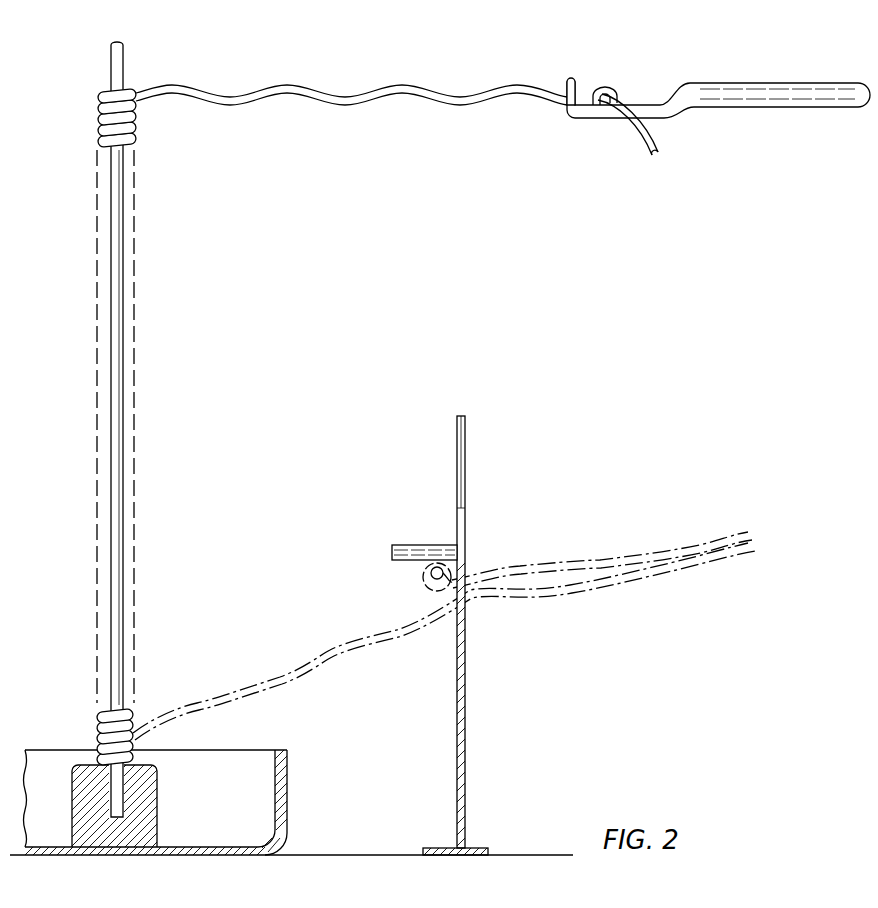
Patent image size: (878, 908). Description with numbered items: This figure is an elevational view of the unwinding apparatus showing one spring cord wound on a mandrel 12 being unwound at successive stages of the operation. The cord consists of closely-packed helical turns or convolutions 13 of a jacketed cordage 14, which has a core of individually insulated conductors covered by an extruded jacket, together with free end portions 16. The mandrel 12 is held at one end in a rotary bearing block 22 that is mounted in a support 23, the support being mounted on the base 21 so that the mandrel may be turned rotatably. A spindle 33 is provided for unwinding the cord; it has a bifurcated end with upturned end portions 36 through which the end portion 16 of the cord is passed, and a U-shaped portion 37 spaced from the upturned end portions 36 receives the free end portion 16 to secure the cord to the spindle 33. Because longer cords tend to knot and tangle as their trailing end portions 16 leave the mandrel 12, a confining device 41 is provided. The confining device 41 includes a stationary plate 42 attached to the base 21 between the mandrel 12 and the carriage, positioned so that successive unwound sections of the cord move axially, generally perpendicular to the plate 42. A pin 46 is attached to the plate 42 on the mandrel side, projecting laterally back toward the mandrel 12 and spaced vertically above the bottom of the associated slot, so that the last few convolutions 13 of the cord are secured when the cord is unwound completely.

The mandrel 12 is at (120, 275).
The helical turns or convolutions 13 is at (100, 137).
The jacketed cordage 14 is at (315, 99).
The end portion 16 is at (648, 148).
The base 21 is at (517, 852).
The bearing block 22 is at (157, 773).
The support 23 is at (288, 762).
The spindle 33 is at (720, 83).
The upturned end portion 36 is at (571, 82).
The hook loop 37 is at (605, 86).
The confining device 41 is at (466, 416).
The stationary plate 42 is at (462, 493).
The pin 46 is at (410, 546).